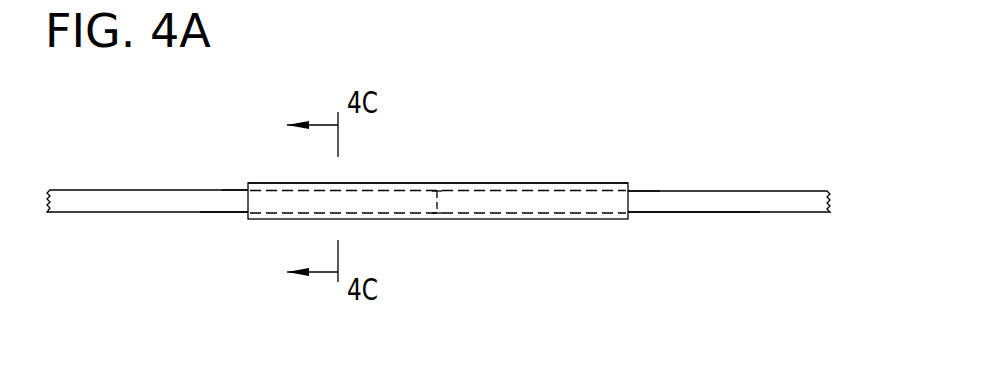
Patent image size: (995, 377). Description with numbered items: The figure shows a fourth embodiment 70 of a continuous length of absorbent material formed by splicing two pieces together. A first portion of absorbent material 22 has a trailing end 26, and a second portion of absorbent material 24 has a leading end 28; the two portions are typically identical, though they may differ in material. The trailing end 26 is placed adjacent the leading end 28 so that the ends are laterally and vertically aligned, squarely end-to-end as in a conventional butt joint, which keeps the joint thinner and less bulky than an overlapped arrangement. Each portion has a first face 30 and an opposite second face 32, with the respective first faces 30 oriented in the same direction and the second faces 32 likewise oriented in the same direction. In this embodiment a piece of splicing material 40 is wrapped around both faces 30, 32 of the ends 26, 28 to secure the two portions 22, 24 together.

The first portion of absorbent material 22 is at (140, 188).
The second portion of absorbent material 24 is at (765, 190).
The trailing end 26 is at (403, 214).
The leading end 28 is at (525, 214).
The first face 30 is at (222, 189).
The second face 32 is at (212, 213).
The piece of splicing material 40 is at (545, 185).
The fourth embodiment 70 is at (479, 158).